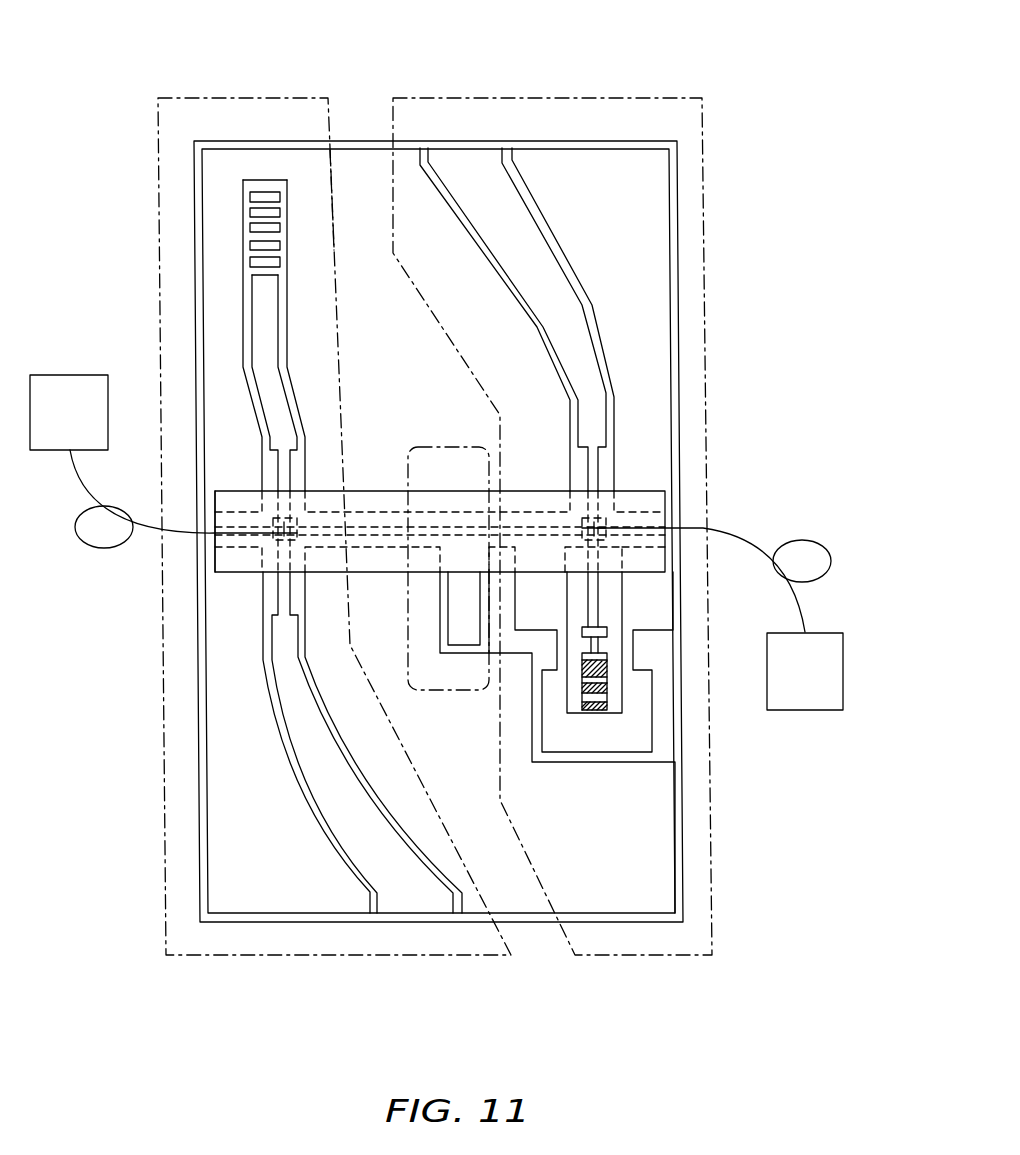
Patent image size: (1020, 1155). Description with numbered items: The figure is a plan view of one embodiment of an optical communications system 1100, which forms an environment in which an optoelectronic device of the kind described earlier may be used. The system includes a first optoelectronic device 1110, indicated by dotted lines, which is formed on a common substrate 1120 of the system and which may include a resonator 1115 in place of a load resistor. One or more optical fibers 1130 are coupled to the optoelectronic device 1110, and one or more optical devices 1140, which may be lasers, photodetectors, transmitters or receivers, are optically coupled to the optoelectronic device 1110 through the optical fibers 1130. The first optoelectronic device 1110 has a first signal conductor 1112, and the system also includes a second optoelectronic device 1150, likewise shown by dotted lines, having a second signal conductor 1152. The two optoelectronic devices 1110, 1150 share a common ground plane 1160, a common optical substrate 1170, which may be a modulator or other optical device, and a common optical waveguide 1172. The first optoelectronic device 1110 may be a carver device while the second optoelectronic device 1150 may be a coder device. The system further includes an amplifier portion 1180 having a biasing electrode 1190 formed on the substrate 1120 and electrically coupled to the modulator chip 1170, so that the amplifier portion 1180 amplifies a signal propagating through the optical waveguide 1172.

The optical communications system 1100 is at (182, 33).
The optoelectronic device 1110 is at (165, 900).
The first signal conductor 1112 is at (405, 895).
The resonator 1115 is at (262, 292).
The common substrate 1120 is at (366, 135).
The optical fibers 1130 is at (92, 549).
The optical devices 1140 is at (78, 374).
The second optoelectronic device 1150 is at (705, 188).
The second signal conductor 1152 is at (480, 160).
The common ground plane 1160 is at (628, 193).
The common optical substrate 1170 is at (650, 490).
The common optical waveguide 1172 is at (233, 541).
The amplifier portion 1180 is at (462, 692).
The biasing electrode 1190 is at (440, 600).